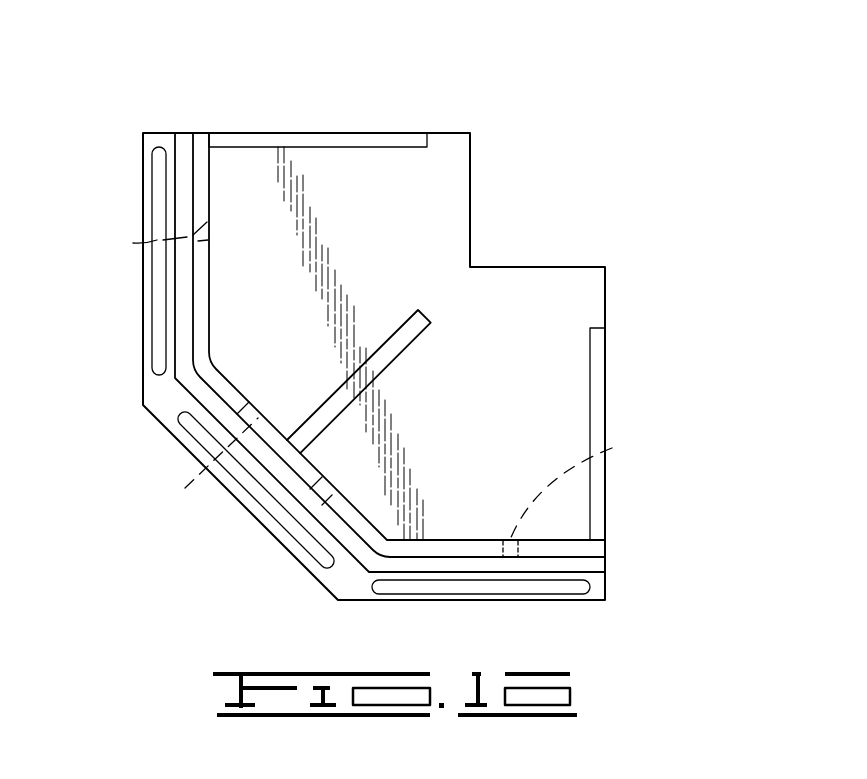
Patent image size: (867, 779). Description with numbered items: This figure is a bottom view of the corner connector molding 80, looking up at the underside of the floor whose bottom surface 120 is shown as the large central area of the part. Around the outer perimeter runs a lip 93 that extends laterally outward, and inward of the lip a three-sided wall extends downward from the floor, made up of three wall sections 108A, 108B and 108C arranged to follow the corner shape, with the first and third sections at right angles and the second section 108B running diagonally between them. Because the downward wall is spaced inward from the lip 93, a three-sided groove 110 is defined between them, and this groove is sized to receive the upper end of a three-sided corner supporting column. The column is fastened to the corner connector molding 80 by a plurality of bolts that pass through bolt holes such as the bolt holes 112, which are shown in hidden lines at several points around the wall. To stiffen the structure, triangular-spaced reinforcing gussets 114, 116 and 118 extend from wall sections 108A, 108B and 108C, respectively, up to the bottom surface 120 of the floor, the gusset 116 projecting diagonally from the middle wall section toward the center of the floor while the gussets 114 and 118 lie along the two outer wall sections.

The corner connector molding 80 is at (597, 117).
The lip 93 is at (167, 402).
The wall section 108A is at (202, 300).
The wall section 108B is at (340, 518).
The wall section 108C is at (550, 540).
The three-sided groove 110 is at (590, 571).
The bolt holes 112 is at (127, 242).
The reinforcing gusset 114 is at (298, 140).
The reinforcing gusset 116 is at (402, 340).
The reinforcing gusset 118 is at (595, 388).
The bottom surface 120 is at (410, 227).